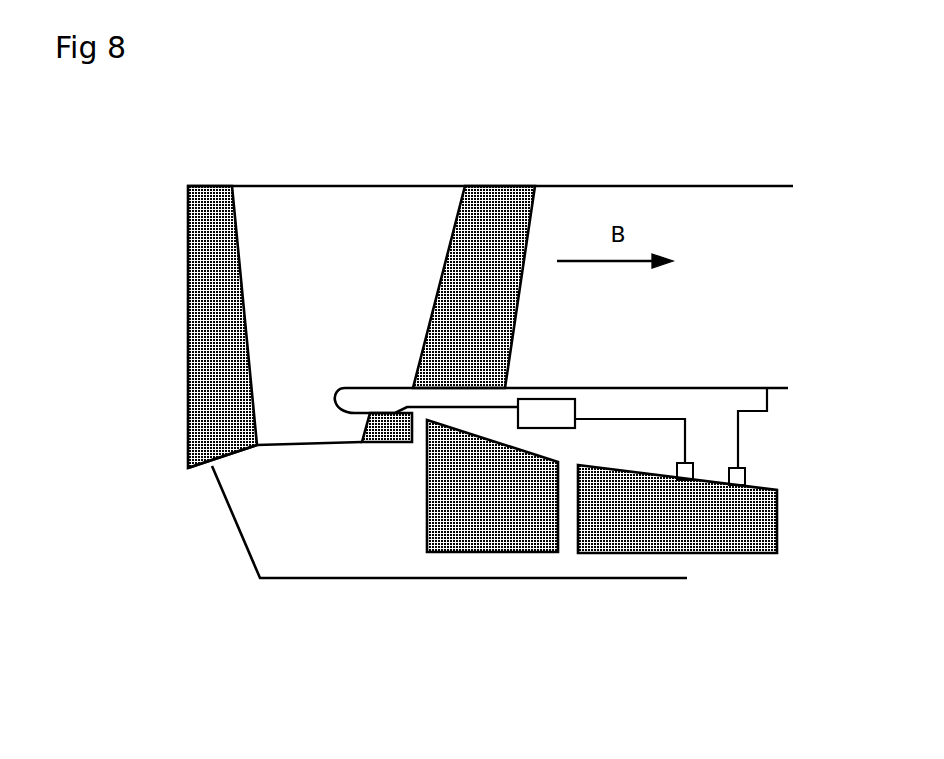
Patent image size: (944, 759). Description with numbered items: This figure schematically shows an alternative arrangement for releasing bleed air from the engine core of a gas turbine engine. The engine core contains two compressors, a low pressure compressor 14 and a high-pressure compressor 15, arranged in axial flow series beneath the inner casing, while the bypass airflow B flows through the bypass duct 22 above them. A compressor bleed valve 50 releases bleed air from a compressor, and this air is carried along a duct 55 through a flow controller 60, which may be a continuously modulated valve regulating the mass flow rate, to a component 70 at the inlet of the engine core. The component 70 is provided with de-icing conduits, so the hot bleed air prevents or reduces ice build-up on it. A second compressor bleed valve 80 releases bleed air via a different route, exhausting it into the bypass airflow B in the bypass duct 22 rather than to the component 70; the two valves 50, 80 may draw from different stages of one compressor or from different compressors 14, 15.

The bypass duct 22 is at (716, 200).
The flow controller 60 is at (550, 399).
The duct 55 is at (646, 419).
The compressor bleed valve 50 is at (680, 483).
The second compressor bleed valve 80 is at (745, 487).
The component 70 is at (397, 445).
The low pressure compressor 14 is at (522, 552).
The high-pressure compressor 15 is at (715, 553).